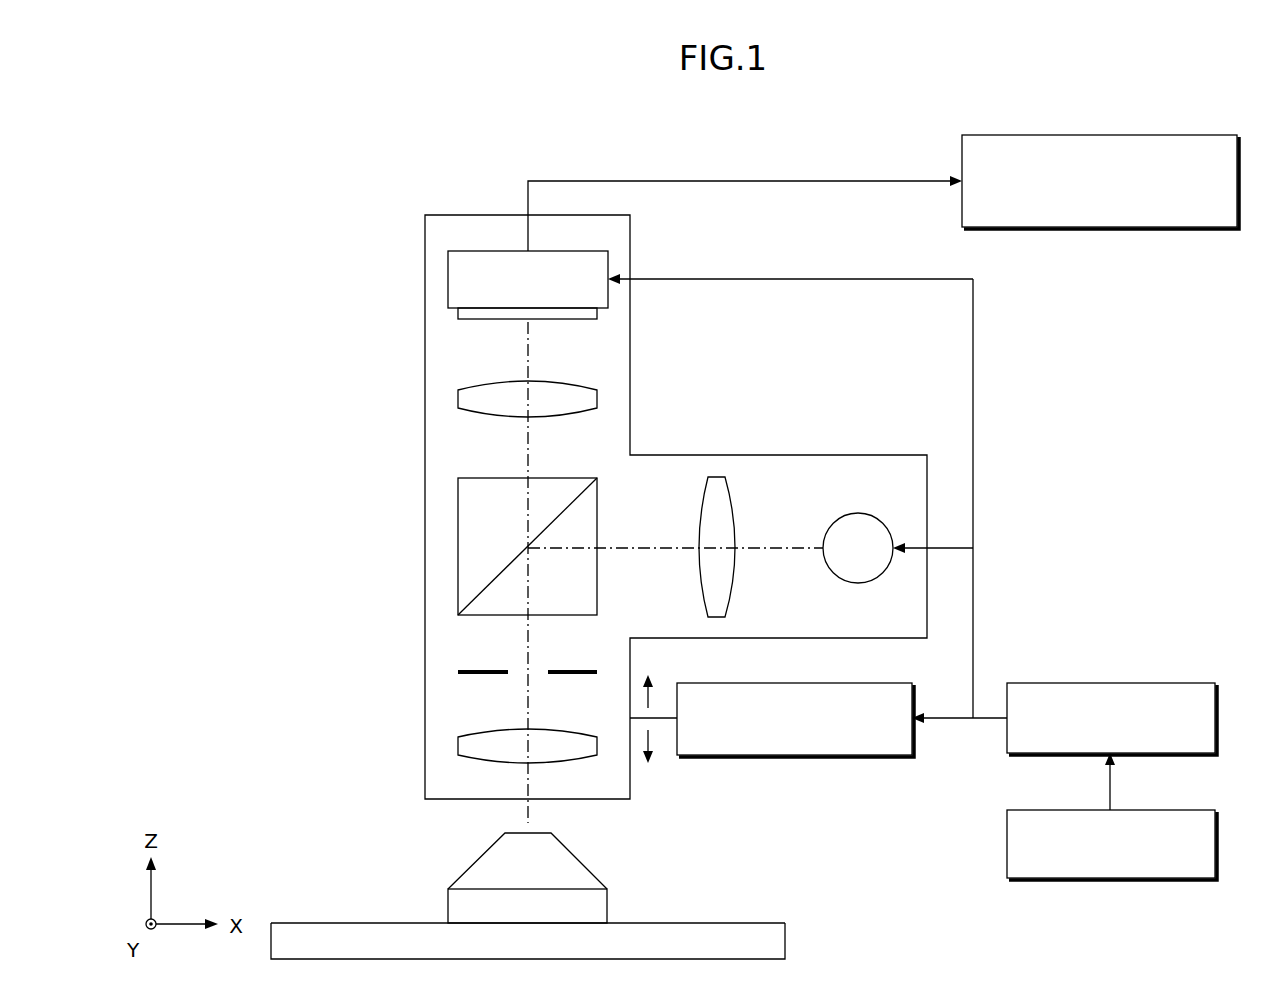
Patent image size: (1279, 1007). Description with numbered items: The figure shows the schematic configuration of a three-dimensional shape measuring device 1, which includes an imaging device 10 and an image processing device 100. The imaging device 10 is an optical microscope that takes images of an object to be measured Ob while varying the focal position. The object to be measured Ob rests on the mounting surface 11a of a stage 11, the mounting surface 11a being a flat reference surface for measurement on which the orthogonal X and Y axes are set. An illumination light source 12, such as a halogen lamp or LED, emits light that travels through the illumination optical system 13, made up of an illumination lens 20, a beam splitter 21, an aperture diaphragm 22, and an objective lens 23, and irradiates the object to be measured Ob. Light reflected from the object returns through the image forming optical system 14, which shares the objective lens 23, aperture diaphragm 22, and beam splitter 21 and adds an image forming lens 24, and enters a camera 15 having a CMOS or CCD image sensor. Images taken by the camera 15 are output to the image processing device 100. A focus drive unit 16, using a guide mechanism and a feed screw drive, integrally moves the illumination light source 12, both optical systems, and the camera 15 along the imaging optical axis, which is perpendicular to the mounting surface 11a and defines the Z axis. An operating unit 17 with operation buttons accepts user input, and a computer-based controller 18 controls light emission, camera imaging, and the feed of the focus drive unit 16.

The three-dimensional shape measuring device 1 is at (618, 133).
The imaging device 10 is at (437, 190).
The stage 11 is at (780, 943).
The mounting surface 11a is at (757, 922).
The illumination light source 12 is at (858, 518).
The illumination optical system 13 is at (772, 466).
The image forming optical system 14 is at (438, 370).
The camera 15 is at (448, 279).
The focus drive unit 16 is at (914, 690).
The operating unit 17 is at (1217, 819).
The controller 18 is at (1217, 692).
The illumination lens 20 is at (717, 480).
The beam splitter 21 is at (465, 548).
The aperture diaphragm 22 is at (458, 672).
The objective lens 23 is at (458, 746).
The image forming lens 24 is at (458, 399).
The image processing device 100 is at (1237, 141).
The object to be measured Ob is at (452, 906).